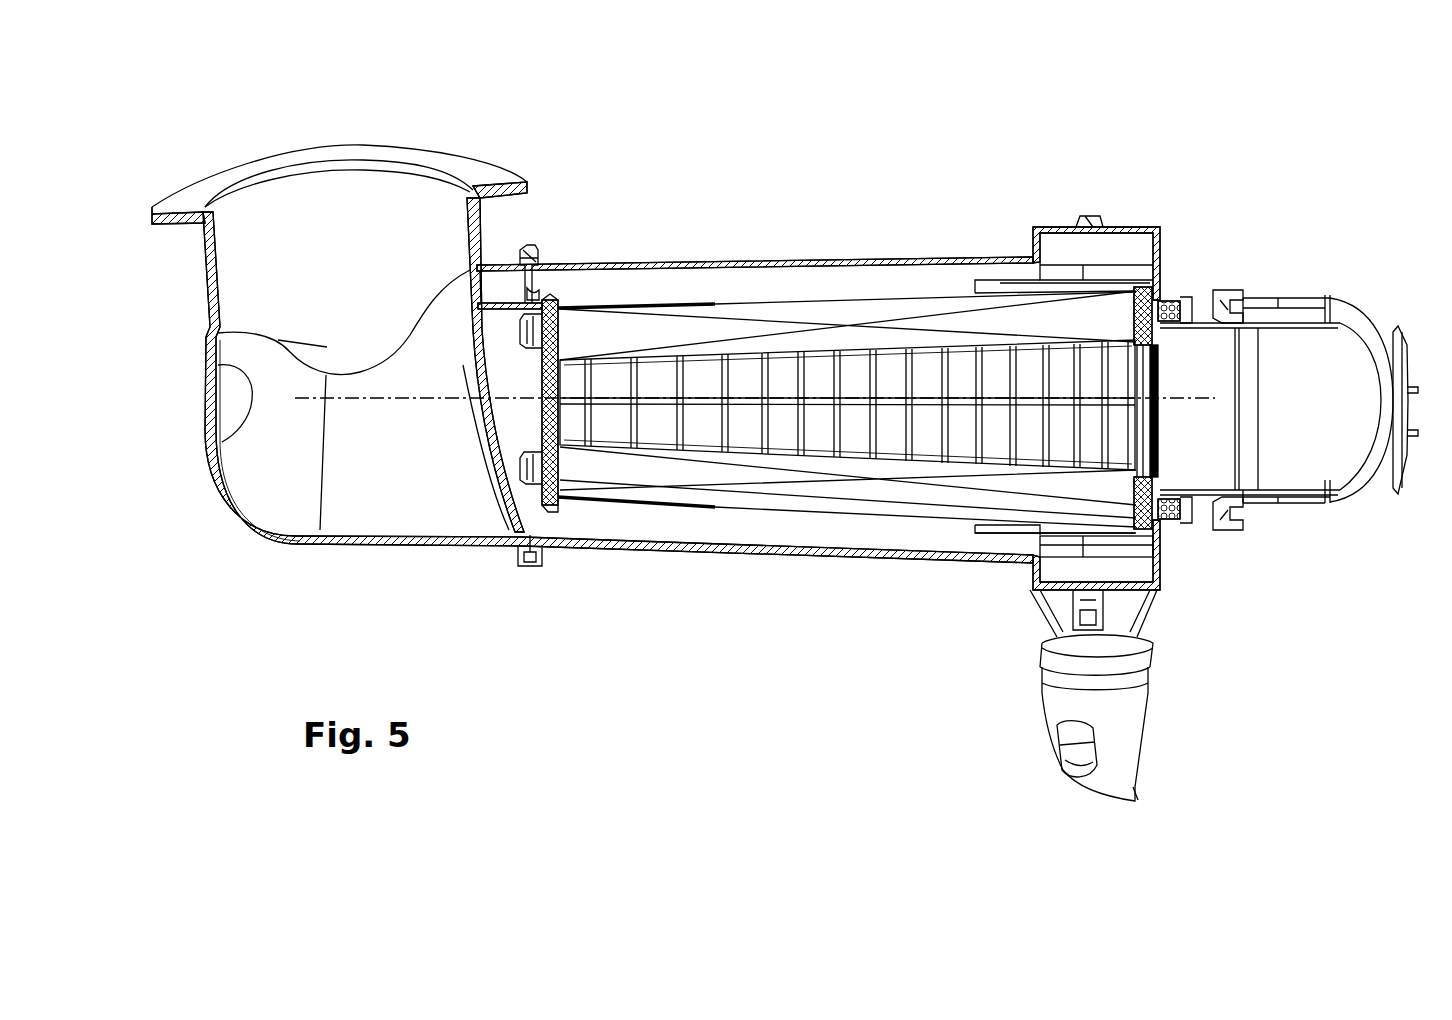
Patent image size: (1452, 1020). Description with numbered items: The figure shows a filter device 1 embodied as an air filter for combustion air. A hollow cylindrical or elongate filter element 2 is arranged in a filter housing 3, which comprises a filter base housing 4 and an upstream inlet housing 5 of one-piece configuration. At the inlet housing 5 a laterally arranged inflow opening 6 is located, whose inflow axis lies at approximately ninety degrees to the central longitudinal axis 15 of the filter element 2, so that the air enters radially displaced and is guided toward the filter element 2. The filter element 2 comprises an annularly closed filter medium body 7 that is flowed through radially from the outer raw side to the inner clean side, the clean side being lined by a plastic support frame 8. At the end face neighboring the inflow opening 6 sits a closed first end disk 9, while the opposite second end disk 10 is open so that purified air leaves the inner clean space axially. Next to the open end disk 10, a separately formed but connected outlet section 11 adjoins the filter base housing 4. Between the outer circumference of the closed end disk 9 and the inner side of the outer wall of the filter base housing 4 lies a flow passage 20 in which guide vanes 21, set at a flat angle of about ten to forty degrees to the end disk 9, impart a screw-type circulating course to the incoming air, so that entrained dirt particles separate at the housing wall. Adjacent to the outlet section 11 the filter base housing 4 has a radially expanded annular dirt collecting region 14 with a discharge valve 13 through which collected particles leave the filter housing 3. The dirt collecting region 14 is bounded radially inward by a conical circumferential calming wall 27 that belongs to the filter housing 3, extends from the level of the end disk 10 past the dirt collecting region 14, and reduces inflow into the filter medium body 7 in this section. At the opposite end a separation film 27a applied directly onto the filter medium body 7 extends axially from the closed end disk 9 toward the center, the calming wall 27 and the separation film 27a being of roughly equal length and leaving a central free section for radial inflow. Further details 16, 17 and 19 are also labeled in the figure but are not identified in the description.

The filter device 1 is at (754, 112).
The filter element 2 is at (643, 298).
The filter housing 3 is at (709, 256).
The filter base housing 4 is at (776, 260).
The inlet housing 5 is at (210, 275).
The inflow opening 6 is at (394, 188).
The filter medium body 7 is at (762, 492).
The support frame 8 is at (817, 410).
The first end disk 9 is at (560, 472).
The second end disk 10 is at (1118, 308).
The outlet section 11 is at (1355, 500).
The discharge valve 13 is at (1133, 716).
The dirt collecting region 14 is at (1120, 598).
The central longitudinal axis 15 is at (428, 408).
The sealing lip 16 is at (465, 345).
The latching hook 17 is at (524, 338).
The inner wall contour 19 is at (219, 382).
The flow passage 20 is at (512, 284).
The guide vanes 21 is at (527, 290).
The calming wall 27 is at (989, 536).
The separation film 27a is at (703, 510).